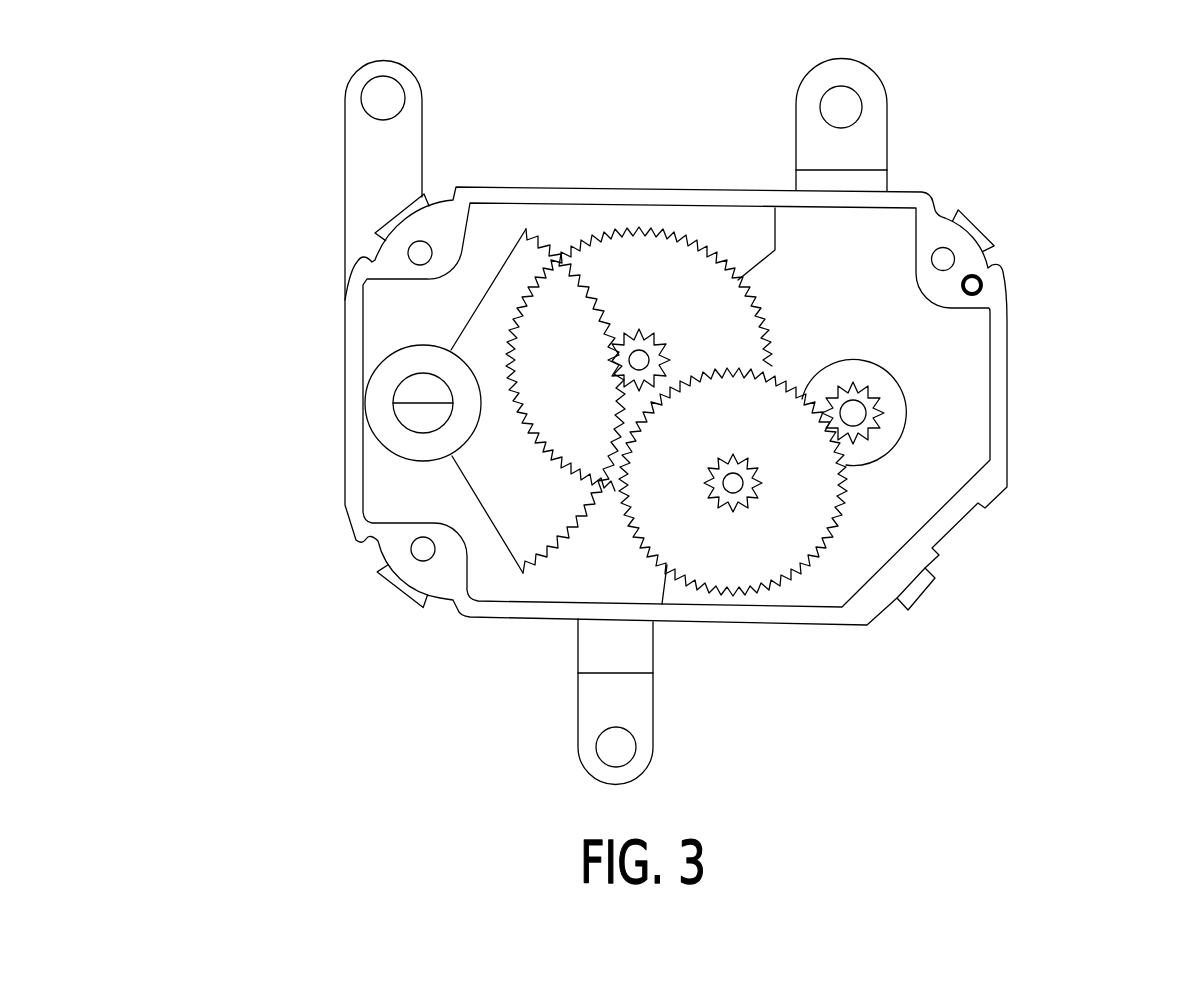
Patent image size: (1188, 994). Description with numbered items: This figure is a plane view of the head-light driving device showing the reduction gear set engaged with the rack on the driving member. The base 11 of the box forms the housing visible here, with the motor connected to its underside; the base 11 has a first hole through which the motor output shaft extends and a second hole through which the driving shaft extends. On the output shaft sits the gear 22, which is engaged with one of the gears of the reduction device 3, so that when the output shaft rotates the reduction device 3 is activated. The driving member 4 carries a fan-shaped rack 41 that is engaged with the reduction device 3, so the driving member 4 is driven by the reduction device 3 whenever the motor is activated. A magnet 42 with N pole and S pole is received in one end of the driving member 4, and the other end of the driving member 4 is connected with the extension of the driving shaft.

The reduction device 3 is at (635, 212).
The driving member 4 is at (398, 367).
The fan-shaped rack 41 is at (520, 518).
The motor shaft 42 is at (403, 417).
The gear 22 is at (877, 408).
The base 11 is at (883, 580).